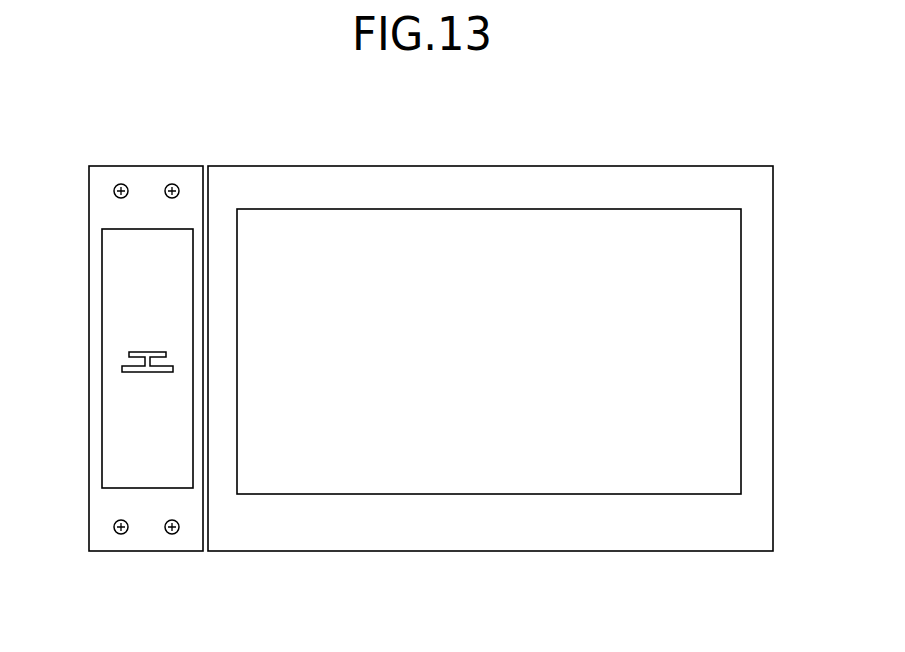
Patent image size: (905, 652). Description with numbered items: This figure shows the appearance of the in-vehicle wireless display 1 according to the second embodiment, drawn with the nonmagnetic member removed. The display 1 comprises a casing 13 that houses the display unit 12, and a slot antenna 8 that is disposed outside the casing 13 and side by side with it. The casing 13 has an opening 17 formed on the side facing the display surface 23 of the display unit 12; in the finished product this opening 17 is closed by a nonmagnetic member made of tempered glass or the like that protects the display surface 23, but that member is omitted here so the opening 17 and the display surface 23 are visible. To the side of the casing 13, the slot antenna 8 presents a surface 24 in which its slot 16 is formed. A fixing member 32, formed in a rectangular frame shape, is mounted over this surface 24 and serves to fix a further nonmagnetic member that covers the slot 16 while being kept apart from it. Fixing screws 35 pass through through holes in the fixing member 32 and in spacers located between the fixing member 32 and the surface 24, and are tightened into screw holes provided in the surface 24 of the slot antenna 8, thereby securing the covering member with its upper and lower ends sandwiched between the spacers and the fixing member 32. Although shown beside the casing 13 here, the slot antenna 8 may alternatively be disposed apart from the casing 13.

The display 1 is at (350, 134).
The slot antenna 8 is at (133, 398).
The display unit 12 is at (563, 459).
The casing 13 is at (760, 338).
The slot 16 is at (140, 352).
The opening 17 is at (291, 494).
The display surface 23 is at (453, 438).
The surface 24 is at (148, 423).
The fixing member 32 is at (99, 265).
The screws 35 is at (113, 191).